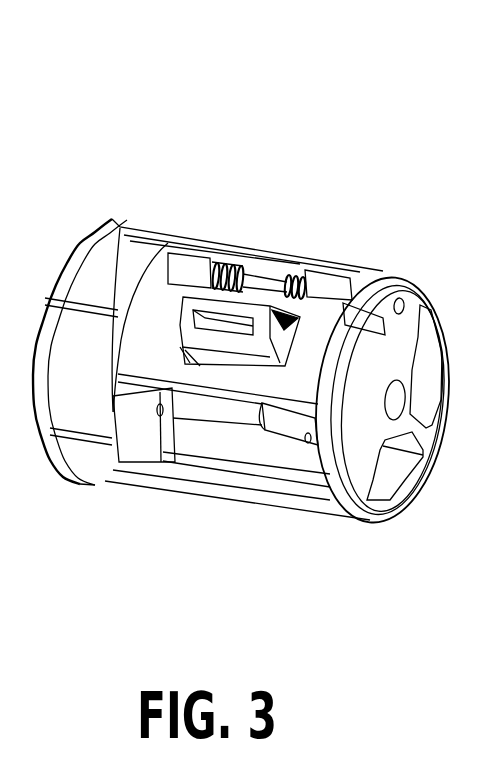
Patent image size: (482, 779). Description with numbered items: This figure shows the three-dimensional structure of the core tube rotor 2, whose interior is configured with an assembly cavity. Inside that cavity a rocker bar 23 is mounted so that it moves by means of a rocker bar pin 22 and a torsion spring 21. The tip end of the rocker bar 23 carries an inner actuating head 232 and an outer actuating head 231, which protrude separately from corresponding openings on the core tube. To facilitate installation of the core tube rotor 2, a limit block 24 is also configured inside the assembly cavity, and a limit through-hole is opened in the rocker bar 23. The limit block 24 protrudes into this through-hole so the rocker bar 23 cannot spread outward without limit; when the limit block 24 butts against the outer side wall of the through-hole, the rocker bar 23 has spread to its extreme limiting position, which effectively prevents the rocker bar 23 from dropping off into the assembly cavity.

The core tube rotor 2 is at (116, 272).
The torsion spring 21 is at (233, 280).
The rocker bar pin 22 is at (278, 287).
The rocker bar 23 is at (160, 336).
The outer actuating head 231 is at (143, 426).
The inner actuating head 232 is at (298, 433).
The limit block 24 is at (230, 338).